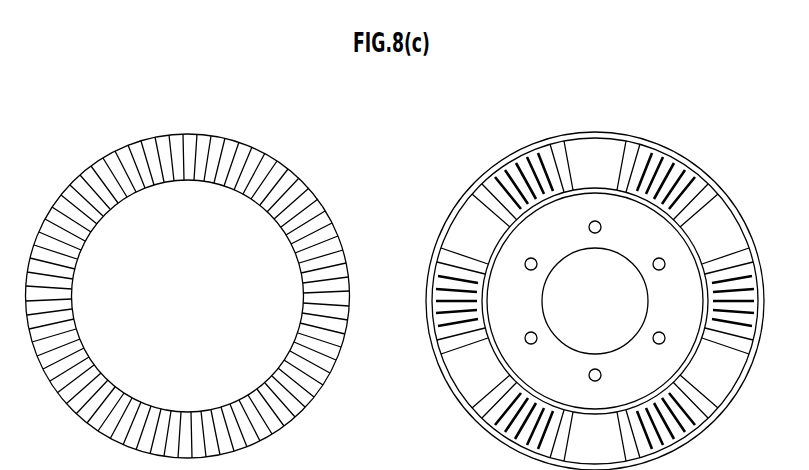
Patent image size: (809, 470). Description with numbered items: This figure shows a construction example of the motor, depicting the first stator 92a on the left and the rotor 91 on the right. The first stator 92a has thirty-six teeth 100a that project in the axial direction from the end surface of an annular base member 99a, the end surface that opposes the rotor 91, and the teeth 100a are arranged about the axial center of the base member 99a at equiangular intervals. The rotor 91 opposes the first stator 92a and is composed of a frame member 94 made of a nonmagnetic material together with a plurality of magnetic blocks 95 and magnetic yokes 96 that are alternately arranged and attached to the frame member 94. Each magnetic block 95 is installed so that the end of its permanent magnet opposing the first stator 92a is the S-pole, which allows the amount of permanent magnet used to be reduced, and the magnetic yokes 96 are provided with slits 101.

The rotor 91 is at (606, 273).
The first stator 92a is at (194, 266).
The frame member 94 is at (756, 237).
The magnetic block 95 is at (596, 149).
The magnetic yoke 96 is at (667, 167).
The annular base member 99a is at (318, 393).
The teeth 100a is at (274, 170).
The slits 101 is at (687, 182).